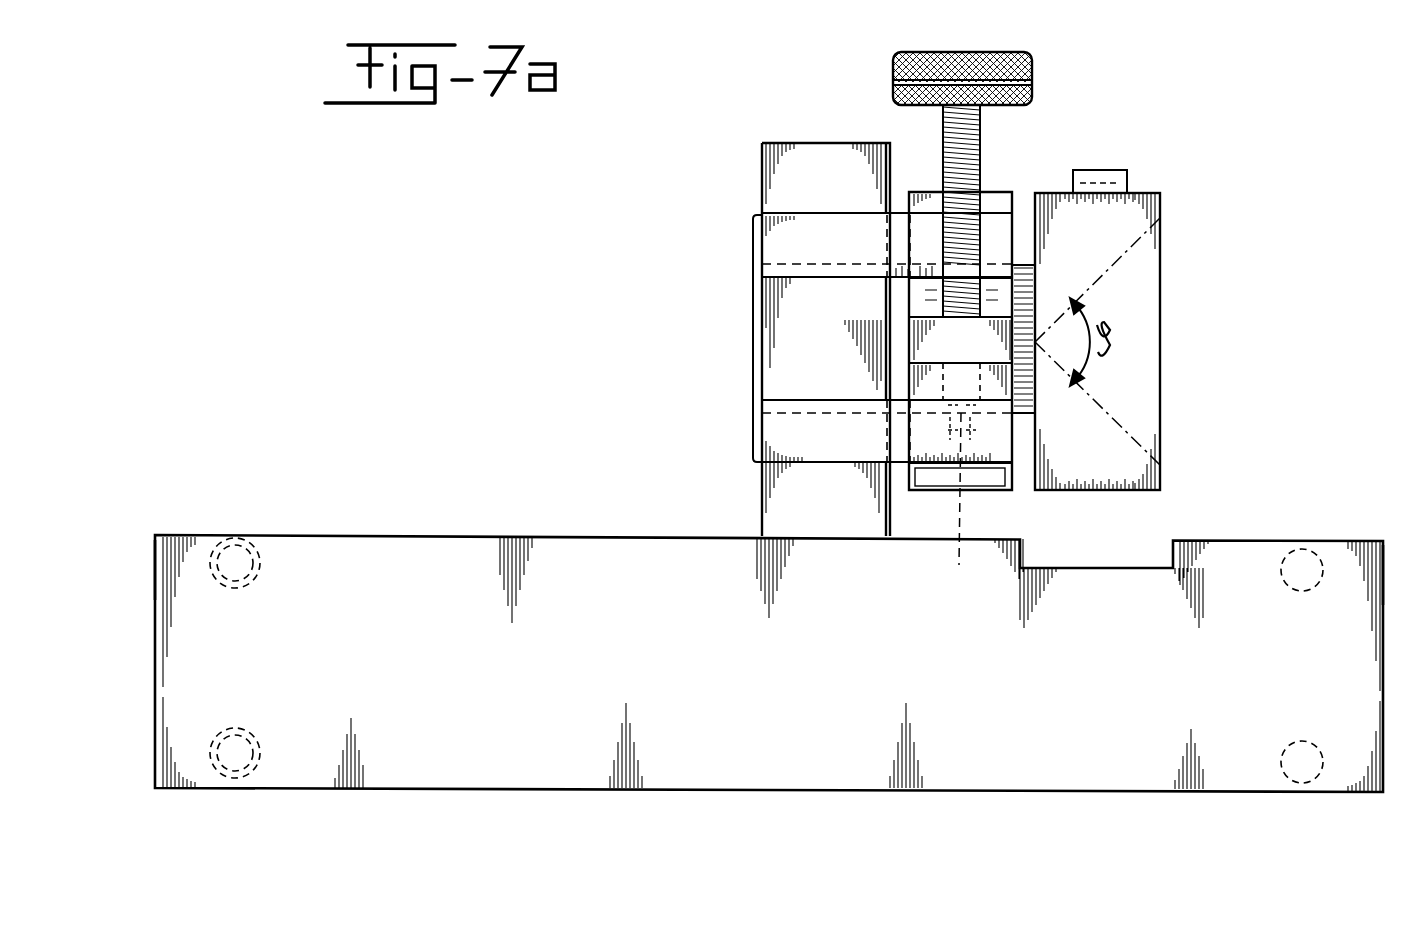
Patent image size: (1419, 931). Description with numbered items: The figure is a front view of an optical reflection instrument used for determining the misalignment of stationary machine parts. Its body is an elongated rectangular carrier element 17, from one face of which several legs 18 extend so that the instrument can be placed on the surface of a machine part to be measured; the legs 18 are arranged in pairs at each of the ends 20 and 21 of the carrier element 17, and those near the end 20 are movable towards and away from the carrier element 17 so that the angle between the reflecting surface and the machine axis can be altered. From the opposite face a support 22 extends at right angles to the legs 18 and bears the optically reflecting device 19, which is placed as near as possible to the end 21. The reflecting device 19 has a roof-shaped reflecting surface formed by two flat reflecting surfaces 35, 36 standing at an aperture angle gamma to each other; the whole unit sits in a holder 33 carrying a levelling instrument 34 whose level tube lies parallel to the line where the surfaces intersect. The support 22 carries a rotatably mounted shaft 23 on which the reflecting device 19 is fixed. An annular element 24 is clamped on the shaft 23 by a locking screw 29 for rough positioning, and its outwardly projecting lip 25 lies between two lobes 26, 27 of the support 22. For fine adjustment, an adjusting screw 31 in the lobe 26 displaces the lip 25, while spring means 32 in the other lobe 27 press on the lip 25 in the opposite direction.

The carrier element 17 is at (415, 565).
The legs 18 is at (245, 540).
The optically reflecting device 19 is at (1138, 310).
The end of the carrier element 20 is at (143, 585).
The end of the carrier element 21 is at (1396, 582).
The support 22 is at (783, 175).
The shaft 23 is at (1022, 263).
The annular element 24 is at (923, 203).
The lip 25 is at (925, 340).
The lobe 26 is at (783, 238).
The lobe 27 is at (778, 440).
The locking screw 29 is at (1033, 92).
The adjusting screw 31 is at (896, 64).
The spring means 32 is at (950, 500).
The holder 33 is at (1138, 200).
The levelling instrument 34 is at (1100, 170).
The flat reflecting surface 35 is at (1124, 253).
The flat reflecting surface 36 is at (1125, 432).